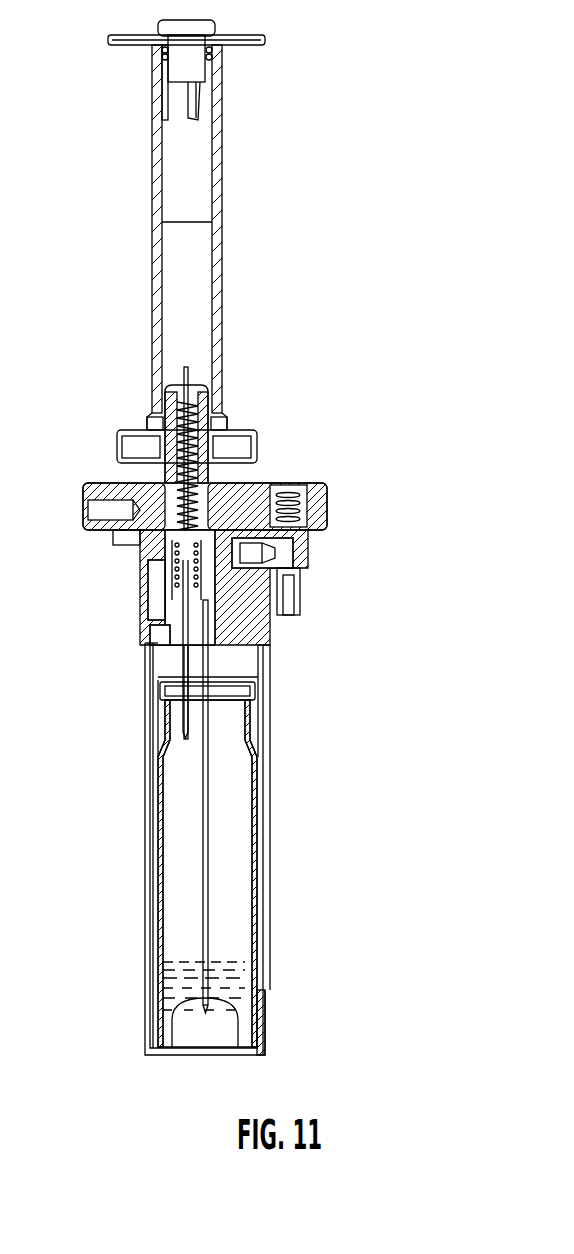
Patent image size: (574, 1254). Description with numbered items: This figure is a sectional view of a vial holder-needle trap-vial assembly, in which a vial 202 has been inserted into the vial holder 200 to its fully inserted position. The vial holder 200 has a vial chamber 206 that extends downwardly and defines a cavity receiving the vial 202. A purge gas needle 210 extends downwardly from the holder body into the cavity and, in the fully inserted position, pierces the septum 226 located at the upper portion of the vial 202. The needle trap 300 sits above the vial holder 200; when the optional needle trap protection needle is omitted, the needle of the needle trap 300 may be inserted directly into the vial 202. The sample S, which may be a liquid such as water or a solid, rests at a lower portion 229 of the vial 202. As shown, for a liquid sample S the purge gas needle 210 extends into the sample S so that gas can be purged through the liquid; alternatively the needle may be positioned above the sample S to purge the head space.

The needle trap 300 is at (293, 213).
The vial holder 200 is at (241, 769).
The septum 226 is at (246, 690).
The purge gas needle 210 is at (195, 855).
The vial chamber 206 is at (268, 828).
The vial 202 is at (247, 897).
The sample S is at (152, 998).
The lower portion 229 is at (262, 1022).